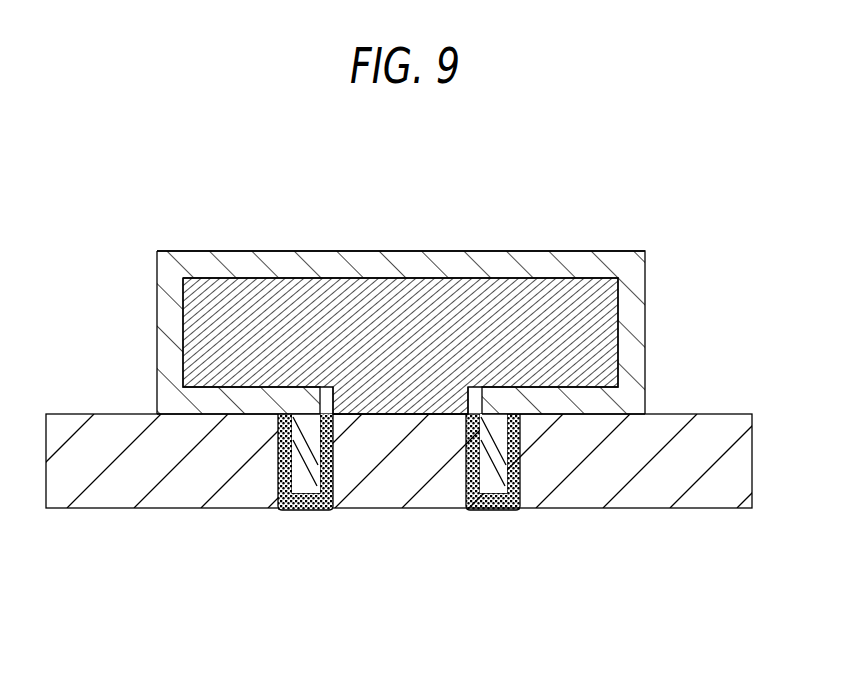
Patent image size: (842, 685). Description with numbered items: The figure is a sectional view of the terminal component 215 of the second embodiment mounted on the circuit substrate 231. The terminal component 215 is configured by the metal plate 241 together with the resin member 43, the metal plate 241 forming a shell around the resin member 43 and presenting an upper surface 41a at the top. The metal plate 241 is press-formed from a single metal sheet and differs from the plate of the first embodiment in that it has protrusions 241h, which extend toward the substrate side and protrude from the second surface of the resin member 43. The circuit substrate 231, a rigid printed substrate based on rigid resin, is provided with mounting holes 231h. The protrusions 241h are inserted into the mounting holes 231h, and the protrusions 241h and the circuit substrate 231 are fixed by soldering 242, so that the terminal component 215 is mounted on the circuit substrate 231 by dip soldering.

The terminal component 215 is at (162, 223).
The upper surface of electrode 41a is at (393, 251).
The metal plate 241 is at (675, 240).
The resin member 43 is at (646, 320).
The circuit substrate 231 is at (662, 496).
The mounting holes 231h is at (277, 509).
The protrusions 241h is at (307, 511).
The soldering 242 is at (334, 510).